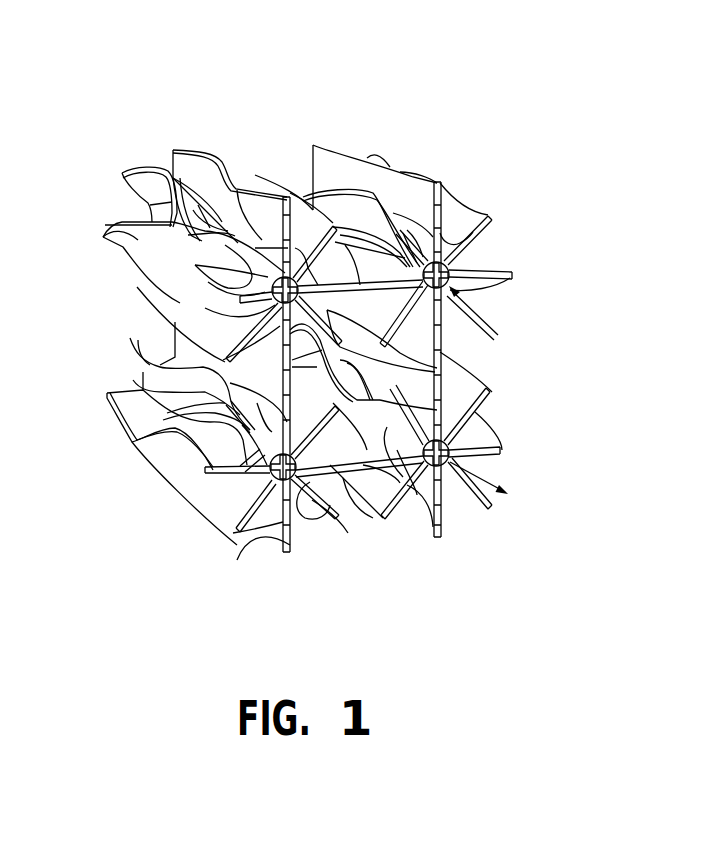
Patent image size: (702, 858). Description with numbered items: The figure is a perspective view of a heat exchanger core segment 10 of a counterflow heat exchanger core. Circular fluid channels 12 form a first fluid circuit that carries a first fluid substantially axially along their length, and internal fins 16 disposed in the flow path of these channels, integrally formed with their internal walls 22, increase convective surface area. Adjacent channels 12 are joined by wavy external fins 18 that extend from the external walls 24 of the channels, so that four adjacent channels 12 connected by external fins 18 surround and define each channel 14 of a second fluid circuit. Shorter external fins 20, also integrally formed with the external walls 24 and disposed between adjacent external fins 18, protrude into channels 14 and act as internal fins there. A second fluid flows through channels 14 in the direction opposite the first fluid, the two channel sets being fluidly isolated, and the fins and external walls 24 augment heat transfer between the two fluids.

The heat exchanger core segment 10 is at (427, 68).
The fluid channels 12 is at (310, 490).
The fluid channels 14 is at (330, 484).
The internal fins 16 is at (295, 300).
The external fins 18 is at (378, 262).
The external fins 20 is at (397, 478).
The internal walls 22 is at (268, 462).
The external walls 24 is at (272, 505).